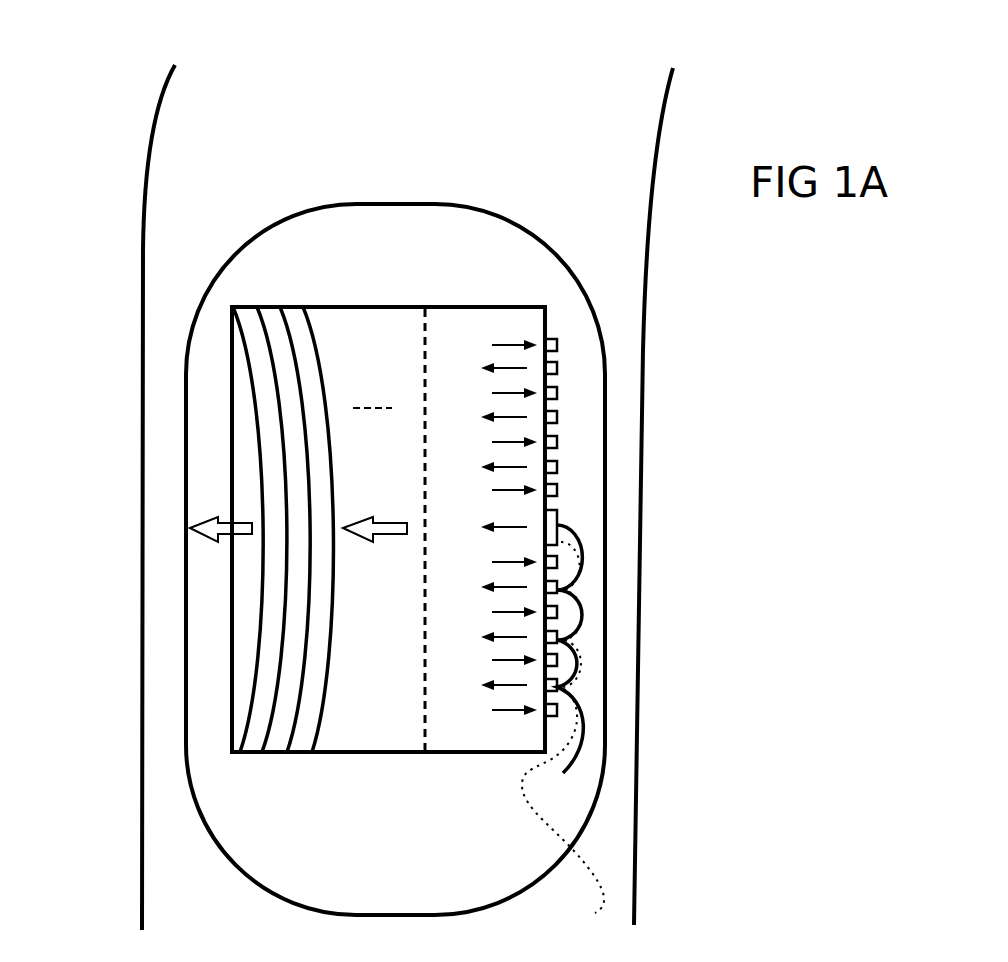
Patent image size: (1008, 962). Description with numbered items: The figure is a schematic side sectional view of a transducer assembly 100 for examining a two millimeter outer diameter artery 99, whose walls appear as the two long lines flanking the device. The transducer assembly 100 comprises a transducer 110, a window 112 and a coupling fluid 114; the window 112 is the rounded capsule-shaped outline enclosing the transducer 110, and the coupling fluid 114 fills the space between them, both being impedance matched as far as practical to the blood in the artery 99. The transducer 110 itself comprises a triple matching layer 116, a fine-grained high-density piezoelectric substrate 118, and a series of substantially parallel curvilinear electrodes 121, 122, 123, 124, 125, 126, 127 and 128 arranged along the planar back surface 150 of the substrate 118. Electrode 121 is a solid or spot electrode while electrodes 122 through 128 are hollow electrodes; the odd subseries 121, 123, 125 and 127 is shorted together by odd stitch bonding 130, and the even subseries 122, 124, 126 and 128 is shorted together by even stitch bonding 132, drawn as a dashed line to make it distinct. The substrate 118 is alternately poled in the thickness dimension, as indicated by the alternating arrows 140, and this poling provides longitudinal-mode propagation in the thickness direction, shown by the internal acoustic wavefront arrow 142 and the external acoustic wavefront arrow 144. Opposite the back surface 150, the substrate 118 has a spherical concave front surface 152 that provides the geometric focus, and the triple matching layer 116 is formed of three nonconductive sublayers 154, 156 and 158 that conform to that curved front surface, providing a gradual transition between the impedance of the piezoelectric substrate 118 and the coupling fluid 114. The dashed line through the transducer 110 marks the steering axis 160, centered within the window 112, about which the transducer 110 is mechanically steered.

The artery 99 is at (147, 148).
The transducer assembly 100 is at (332, 460).
The transducer 110 is at (478, 305).
The window 112 is at (183, 407).
The coupling fluid 114 is at (213, 590).
The triple matching layer 116 is at (189, 527).
The piezoelectric substrate 118 is at (373, 395).
The electrode 121 is at (558, 518).
The electrode 122 is at (558, 488).
The electrode 123 is at (558, 467).
The electrode 124 is at (558, 441).
The electrode 125 is at (558, 417).
The electrode 126 is at (558, 393).
The electrode 127 is at (558, 367).
The electrode 128 is at (558, 342).
The odd stitch bonding 130 is at (570, 765).
The even stitch bonding 132 is at (563, 737).
The poling arrows 140 is at (510, 713).
The internal acoustic wavefront arrow 142 is at (393, 523).
The external acoustic wavefront arrow 144 is at (240, 523).
The planar back surface 150 is at (632, 455).
The spherical concave front surface 152 is at (330, 460).
The nonconductive sublayer 154 is at (297, 744).
The nonconductive sublayer 156 is at (268, 744).
The nonconductive sublayer 158 is at (248, 744).
The steering axis 160 is at (425, 745).